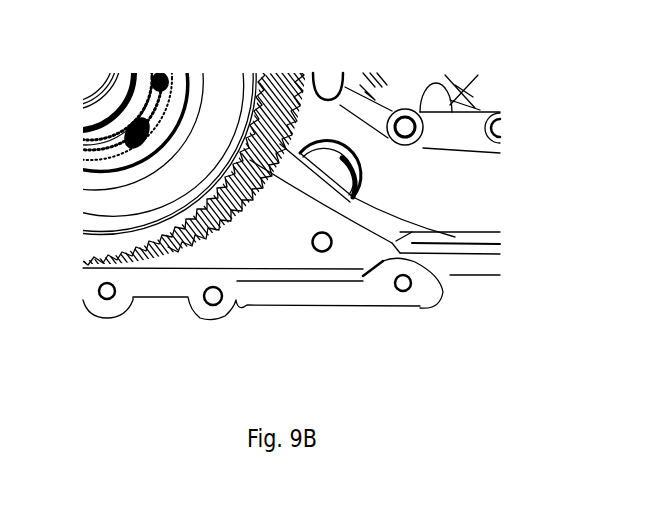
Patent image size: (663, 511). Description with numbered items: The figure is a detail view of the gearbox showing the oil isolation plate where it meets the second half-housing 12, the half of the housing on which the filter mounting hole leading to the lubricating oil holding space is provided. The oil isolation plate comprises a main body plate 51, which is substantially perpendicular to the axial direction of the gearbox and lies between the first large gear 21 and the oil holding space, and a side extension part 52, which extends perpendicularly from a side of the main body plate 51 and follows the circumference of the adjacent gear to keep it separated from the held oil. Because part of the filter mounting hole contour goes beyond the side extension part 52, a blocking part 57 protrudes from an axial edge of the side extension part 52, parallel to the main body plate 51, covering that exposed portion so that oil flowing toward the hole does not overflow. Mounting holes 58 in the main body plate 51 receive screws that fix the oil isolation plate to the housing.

The first large gear 21 is at (140, 243).
The main body plate 51 is at (237, 255).
The side extension part 52 is at (387, 230).
The blocking part 57 is at (340, 145).
The mounting holes 58 is at (317, 252).
The second half-housing 12 is at (448, 265).